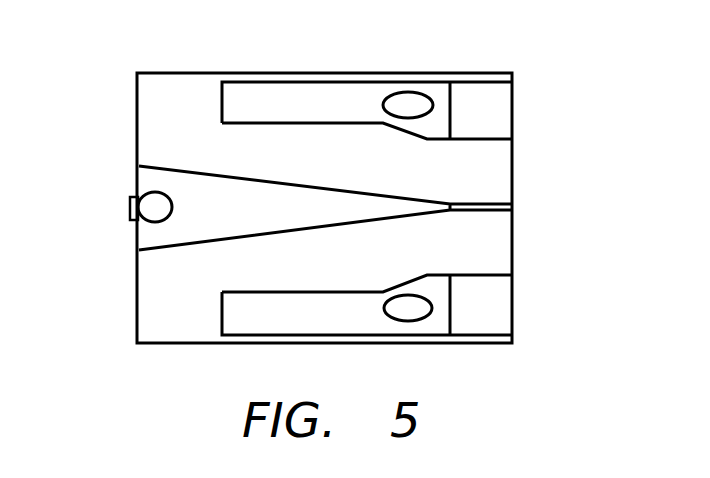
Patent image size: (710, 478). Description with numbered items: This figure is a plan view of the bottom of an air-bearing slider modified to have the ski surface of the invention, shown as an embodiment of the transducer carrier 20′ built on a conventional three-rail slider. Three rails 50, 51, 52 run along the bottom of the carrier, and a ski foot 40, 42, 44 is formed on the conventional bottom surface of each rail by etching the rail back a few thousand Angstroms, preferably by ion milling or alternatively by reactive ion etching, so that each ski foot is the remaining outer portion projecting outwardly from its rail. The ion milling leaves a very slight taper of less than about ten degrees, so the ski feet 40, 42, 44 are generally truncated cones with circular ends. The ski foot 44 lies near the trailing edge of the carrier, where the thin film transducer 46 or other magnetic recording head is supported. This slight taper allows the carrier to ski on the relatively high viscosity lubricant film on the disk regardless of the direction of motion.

The transducer carrier 20′ is at (570, 45).
The ski foot 40 is at (418, 104).
The ski foot 42 is at (418, 307).
The ski foot 44 is at (155, 206).
The thin film transducer 46 is at (130, 207).
The rail 50 is at (308, 97).
The rail 51 is at (308, 317).
The rail 52 is at (248, 215).